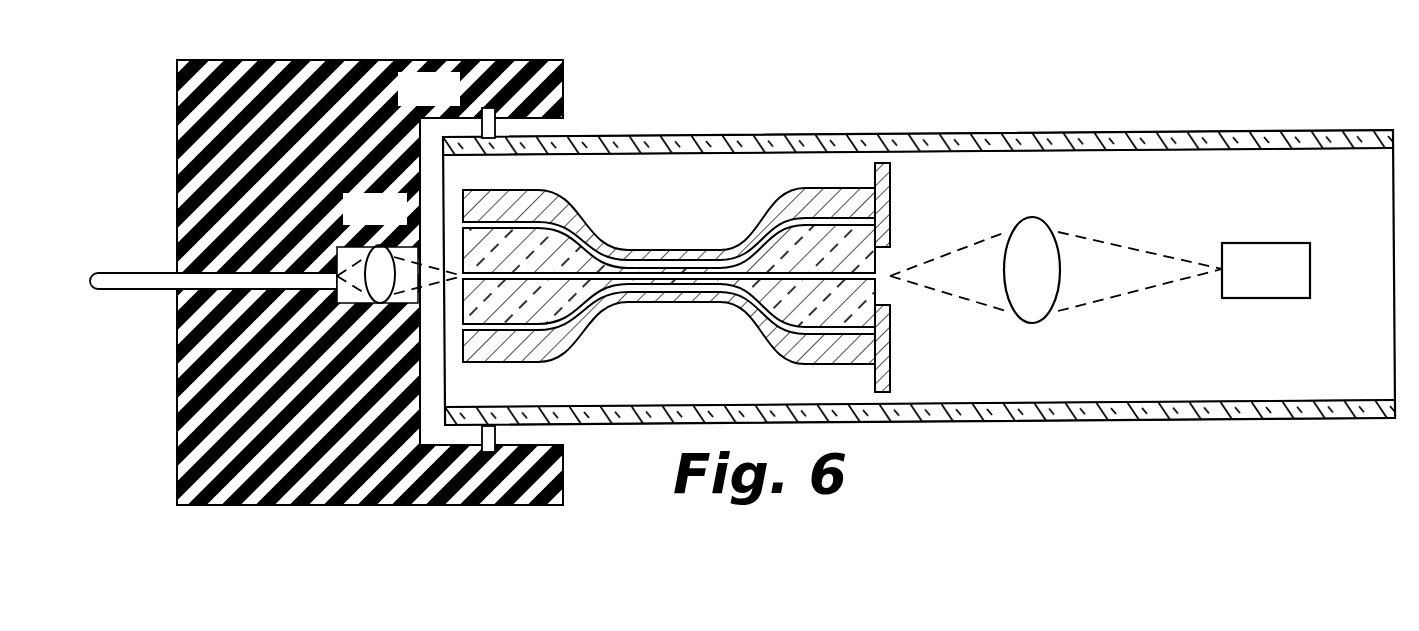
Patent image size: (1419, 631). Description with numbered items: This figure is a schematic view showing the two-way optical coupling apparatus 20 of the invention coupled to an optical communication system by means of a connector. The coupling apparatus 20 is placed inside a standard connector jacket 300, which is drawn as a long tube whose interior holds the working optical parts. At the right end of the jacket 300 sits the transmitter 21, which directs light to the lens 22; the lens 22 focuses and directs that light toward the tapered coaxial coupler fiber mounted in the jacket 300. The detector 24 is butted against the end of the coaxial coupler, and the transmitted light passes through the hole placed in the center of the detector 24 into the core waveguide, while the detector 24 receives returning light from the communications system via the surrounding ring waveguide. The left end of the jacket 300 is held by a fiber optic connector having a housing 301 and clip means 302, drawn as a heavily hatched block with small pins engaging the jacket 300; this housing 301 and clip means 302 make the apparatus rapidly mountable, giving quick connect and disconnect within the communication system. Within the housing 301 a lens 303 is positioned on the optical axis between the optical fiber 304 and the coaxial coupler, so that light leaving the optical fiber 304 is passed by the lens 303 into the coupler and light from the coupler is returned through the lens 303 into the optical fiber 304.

The two-way optical coupling apparatus 20 is at (1113, 213).
The transmitter 21 is at (1262, 255).
The lens 22 is at (1034, 228).
The detector 24 is at (892, 186).
The connector jacket 300 is at (998, 132).
The housing 301 is at (310, 70).
The clip means 302 is at (481, 106).
The lens 303 is at (380, 258).
The optical fiber 304 is at (132, 281).